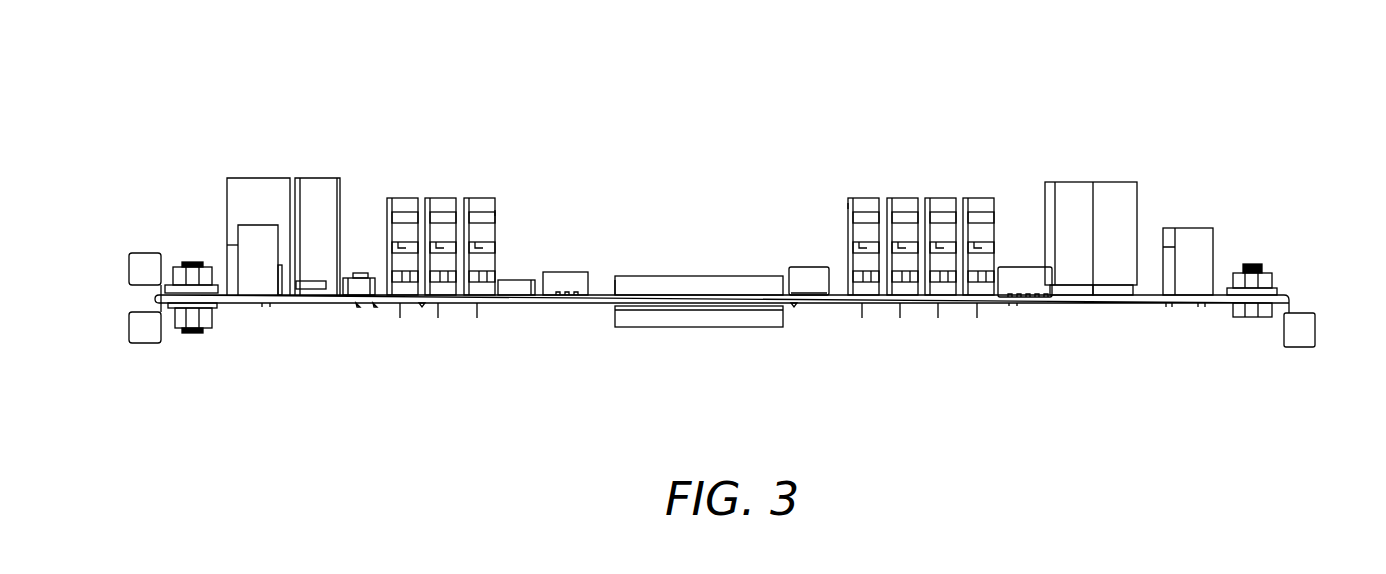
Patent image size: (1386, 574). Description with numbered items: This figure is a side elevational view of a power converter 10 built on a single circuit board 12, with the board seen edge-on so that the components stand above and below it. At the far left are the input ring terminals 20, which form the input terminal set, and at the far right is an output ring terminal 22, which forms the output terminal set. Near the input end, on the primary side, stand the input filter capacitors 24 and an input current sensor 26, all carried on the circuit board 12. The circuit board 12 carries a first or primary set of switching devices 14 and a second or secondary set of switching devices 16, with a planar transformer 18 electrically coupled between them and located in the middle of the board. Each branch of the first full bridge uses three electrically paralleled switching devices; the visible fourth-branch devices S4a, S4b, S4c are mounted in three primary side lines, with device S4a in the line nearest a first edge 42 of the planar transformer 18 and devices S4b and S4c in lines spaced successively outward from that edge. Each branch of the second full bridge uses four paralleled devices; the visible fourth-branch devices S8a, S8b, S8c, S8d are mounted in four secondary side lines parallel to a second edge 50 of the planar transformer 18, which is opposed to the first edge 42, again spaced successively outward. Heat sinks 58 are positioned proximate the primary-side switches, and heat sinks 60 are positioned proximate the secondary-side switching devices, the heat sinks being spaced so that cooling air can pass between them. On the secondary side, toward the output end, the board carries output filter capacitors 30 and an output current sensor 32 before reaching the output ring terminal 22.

The power converter 10 is at (1302, 68).
The circuit board 12 is at (1147, 296).
The first or primary set of switching devices 14 is at (468, 93).
The second or secondary set of switching devices 16 is at (950, 92).
The planar transformer 18 is at (702, 275).
The input ring terminals 20 is at (128, 270).
The output ring terminals 22 is at (1315, 330).
The input filter capacitors 24 is at (317, 260).
The input current sensors 26 is at (255, 275).
The output filter capacitors 30 is at (1072, 260).
The output current sensors 32 is at (1213, 237).
The first edge of the planar transformer 42 is at (615, 287).
The second edge of the planar transformer 50 is at (789, 267).
The heat sinks 58 is at (496, 213).
The heat sinks 60 is at (848, 206).
The switching device S4a is at (480, 203).
The switching device S4b is at (442, 203).
The switching device S4c is at (405, 203).
The switching device S8a is at (865, 203).
The switching device S8b is at (903, 203).
The switching device S8c is at (942, 203).
The switching device S8d is at (980, 203).